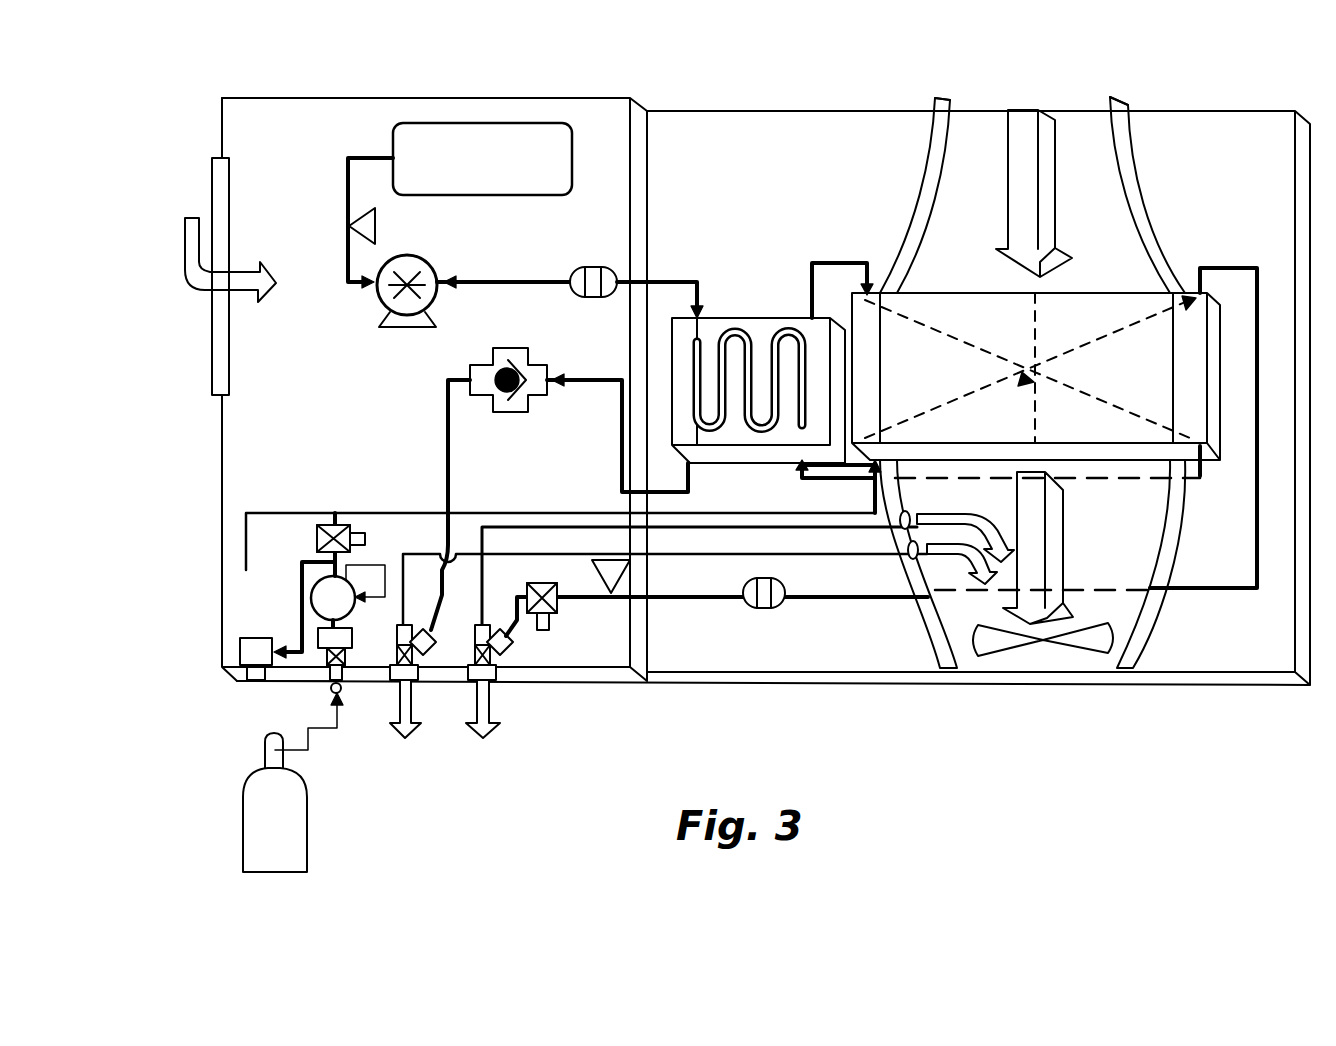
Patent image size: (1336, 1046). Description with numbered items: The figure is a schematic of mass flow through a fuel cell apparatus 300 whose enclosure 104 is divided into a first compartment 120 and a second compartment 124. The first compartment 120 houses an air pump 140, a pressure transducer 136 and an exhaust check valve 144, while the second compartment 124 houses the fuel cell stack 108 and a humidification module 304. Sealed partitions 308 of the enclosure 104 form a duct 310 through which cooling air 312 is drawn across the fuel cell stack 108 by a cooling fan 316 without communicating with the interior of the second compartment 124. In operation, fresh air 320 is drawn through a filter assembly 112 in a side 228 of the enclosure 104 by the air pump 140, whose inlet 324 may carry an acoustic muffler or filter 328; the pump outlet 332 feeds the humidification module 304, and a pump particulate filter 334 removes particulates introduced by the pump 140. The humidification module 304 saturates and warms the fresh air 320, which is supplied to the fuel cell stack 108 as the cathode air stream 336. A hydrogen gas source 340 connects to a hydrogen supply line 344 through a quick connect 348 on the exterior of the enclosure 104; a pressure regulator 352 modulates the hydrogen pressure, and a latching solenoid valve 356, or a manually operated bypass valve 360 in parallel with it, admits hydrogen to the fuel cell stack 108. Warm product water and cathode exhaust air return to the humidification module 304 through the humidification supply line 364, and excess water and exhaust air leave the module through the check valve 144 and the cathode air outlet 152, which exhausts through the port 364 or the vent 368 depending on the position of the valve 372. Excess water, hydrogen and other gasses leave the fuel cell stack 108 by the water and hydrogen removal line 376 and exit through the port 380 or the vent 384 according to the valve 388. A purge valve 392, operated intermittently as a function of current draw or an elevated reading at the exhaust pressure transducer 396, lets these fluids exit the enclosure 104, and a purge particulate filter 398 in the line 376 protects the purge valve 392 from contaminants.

The fuel cell apparatus 300 is at (682, 45).
The enclosure 104 is at (1235, 687).
The fuel cell stack 108 is at (962, 292).
The filter assembly 112 is at (212, 178).
The first compartment 120 is at (612, 650).
The second compartment 124 is at (925, 664).
The pressure transducer 136 is at (378, 226).
The air pump 140 is at (379, 300).
The exhaust check valve 144 is at (527, 345).
The cathode air outlet 152 is at (447, 441).
The side of the enclosure 228 is at (221, 133).
The humidification module 304 is at (710, 317).
The partitions 308 is at (945, 120).
The duct 310 is at (998, 115).
The cooling air 312 is at (1008, 180).
The cooling fan 316 is at (1090, 668).
The fresh air 320 is at (185, 250).
The inlet of the air pump 324 is at (348, 158).
The acoustic muffler or filter 328 is at (566, 124).
The pump outlet 332 is at (662, 280).
The pump particulate filter 334 is at (572, 296).
The cathode air stream 336 is at (832, 262).
The hydrogen gas source 340 is at (243, 798).
The hydrogen supply line 344 is at (578, 511).
The quick connect 348 is at (340, 697).
The pressure regulator 352 is at (345, 580).
The latching solenoid valve 356 is at (335, 512).
The bypass valve 360 is at (240, 651).
The humidification supply line 364 is at (420, 677).
The vent 368 is at (905, 548).
The valve 372 is at (238, 684).
The water and hydrogen removal line 376 is at (1215, 588).
The port 380 is at (483, 668).
The vent 384 is at (905, 520).
The valve 388 is at (510, 655).
The purge valve 392 is at (558, 612).
The exhaust pressure transducer 396 is at (618, 558).
The purge particulate filter 398 is at (745, 604).